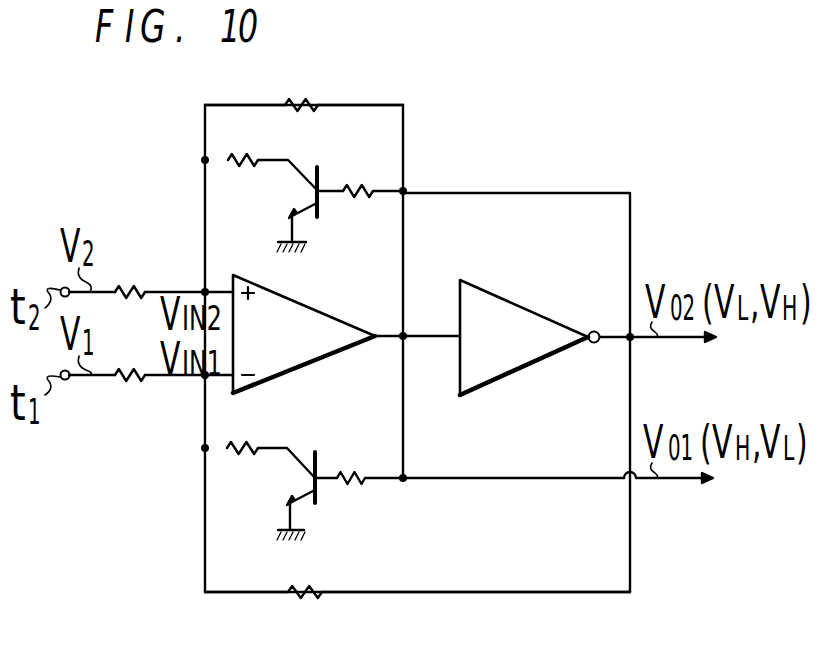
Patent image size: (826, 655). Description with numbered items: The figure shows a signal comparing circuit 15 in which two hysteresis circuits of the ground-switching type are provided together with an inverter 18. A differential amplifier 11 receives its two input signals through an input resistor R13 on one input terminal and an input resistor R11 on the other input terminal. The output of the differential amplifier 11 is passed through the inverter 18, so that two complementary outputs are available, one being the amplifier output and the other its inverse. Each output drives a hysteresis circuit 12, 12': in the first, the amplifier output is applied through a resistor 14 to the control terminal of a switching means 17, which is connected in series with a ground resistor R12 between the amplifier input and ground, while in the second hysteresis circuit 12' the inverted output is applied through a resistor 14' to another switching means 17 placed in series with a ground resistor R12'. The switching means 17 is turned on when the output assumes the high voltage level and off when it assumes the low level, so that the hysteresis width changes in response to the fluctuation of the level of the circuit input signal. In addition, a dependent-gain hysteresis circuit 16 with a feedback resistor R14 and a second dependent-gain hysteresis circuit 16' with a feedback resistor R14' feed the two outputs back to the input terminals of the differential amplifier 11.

The differential amplifier 11 is at (335, 352).
The hysteresis circuit 12 is at (330, 476).
The hysteresis circuit 12' is at (403, 191).
The resistor 14 is at (377, 511).
The resistor 14' is at (360, 159).
The signal comparing circuit 15 is at (383, 304).
The dependent-gain hysteresis circuit 16 is at (339, 120).
The dependent-gain hysteresis circuit 16' is at (417, 560).
The switching means 17 is at (320, 200).
The inverter 18 is at (530, 365).
The input resistor R11 is at (130, 378).
The ground resistor R12 is at (268, 420).
The ground resistor R12' is at (247, 205).
The input resistor R13 is at (130, 292).
The feedback resistor R14 is at (330, 81).
The feedback resistor R14' is at (327, 620).